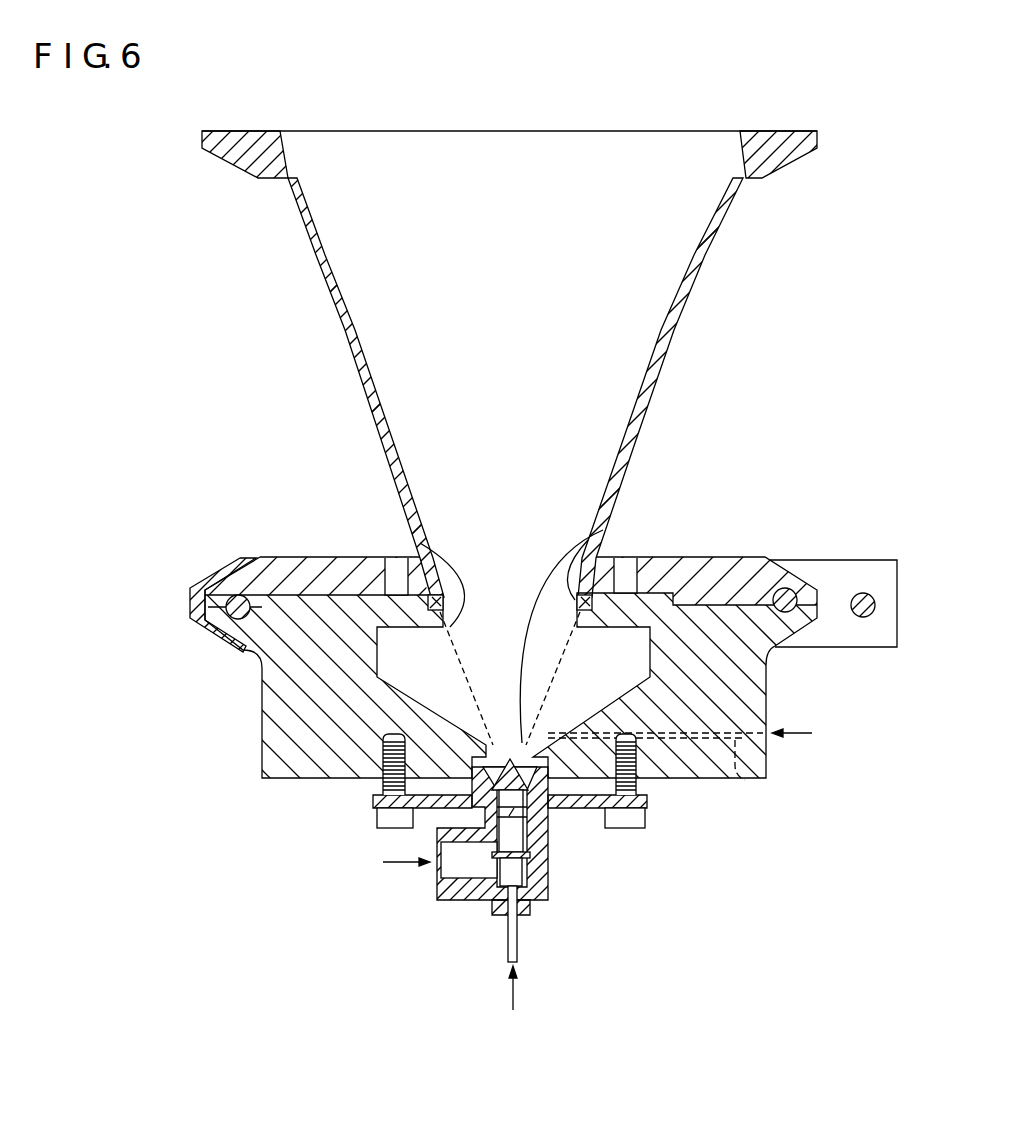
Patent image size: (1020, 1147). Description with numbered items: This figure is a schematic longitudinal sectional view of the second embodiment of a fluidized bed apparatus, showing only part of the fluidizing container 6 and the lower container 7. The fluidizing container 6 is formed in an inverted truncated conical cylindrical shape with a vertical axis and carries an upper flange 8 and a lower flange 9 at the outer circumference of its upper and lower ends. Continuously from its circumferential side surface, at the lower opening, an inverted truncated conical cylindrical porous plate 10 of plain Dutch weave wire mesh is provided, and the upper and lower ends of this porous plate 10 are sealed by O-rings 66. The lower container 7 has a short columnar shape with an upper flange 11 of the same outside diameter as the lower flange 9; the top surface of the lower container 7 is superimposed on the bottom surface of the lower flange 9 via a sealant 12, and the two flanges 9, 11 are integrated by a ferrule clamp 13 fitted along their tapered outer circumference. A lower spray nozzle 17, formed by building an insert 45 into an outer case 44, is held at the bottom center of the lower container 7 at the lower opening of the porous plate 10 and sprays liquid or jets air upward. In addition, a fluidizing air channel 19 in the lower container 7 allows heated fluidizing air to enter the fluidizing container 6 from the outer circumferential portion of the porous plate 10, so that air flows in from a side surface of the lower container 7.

The fluidizing container 6 is at (685, 338).
The upper flange 8 is at (781, 157).
The lower flange 9 is at (748, 558).
The porous plate 10 is at (425, 543).
The O-ring 66 is at (607, 532).
The sealant 12 is at (786, 592).
The upper flange of the lower container 11 is at (808, 617).
The ferrule clamp 13 is at (217, 577).
The lower container 7 is at (770, 763).
The fluidizing air channel 19 is at (743, 782).
The lower spray nozzle 17 is at (560, 860).
The outer case 44 is at (540, 887).
The insert 45 is at (497, 842).